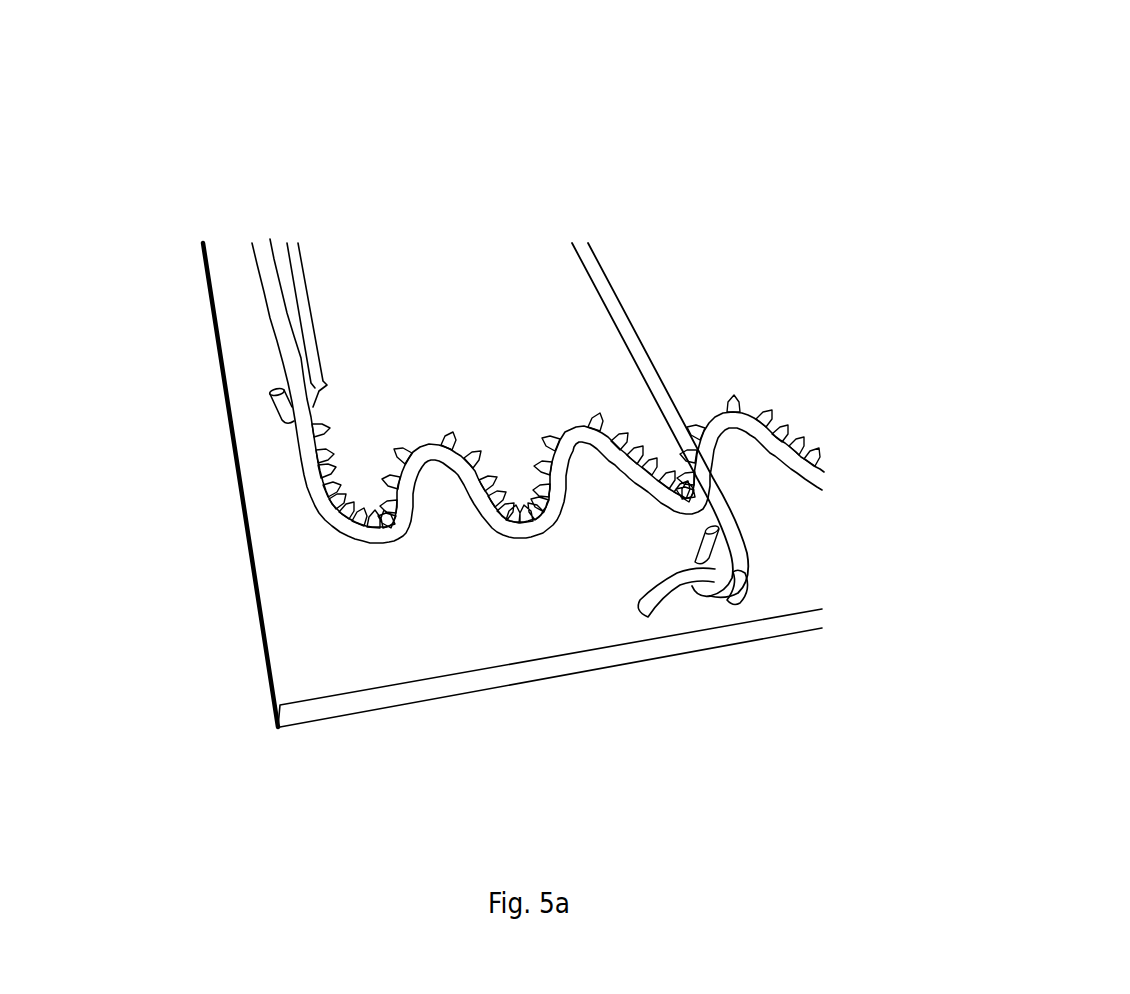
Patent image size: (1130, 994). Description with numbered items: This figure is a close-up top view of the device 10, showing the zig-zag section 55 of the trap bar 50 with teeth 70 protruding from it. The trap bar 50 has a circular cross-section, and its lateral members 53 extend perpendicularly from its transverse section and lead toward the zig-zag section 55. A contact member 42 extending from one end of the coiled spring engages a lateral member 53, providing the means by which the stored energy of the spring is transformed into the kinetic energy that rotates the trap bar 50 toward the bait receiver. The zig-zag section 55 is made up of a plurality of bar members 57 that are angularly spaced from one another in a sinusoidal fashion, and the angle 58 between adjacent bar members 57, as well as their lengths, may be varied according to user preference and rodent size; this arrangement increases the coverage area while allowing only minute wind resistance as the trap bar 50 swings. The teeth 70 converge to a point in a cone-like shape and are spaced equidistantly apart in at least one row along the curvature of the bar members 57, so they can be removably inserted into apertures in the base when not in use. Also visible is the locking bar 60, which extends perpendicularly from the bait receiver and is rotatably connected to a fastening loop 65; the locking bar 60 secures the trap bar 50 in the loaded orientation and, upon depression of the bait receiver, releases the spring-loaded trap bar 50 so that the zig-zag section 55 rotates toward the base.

The device 10 is at (972, 161).
The contact member 42 is at (278, 408).
The trap bar 50 is at (630, 283).
The lateral member 53 is at (270, 277).
The zig-zag section 55 is at (497, 520).
The bar member 57 is at (362, 527).
The angle 58 is at (513, 465).
The locking bar 60 is at (638, 348).
The fastening loop 65 is at (670, 585).
The teeth 70 is at (803, 447).